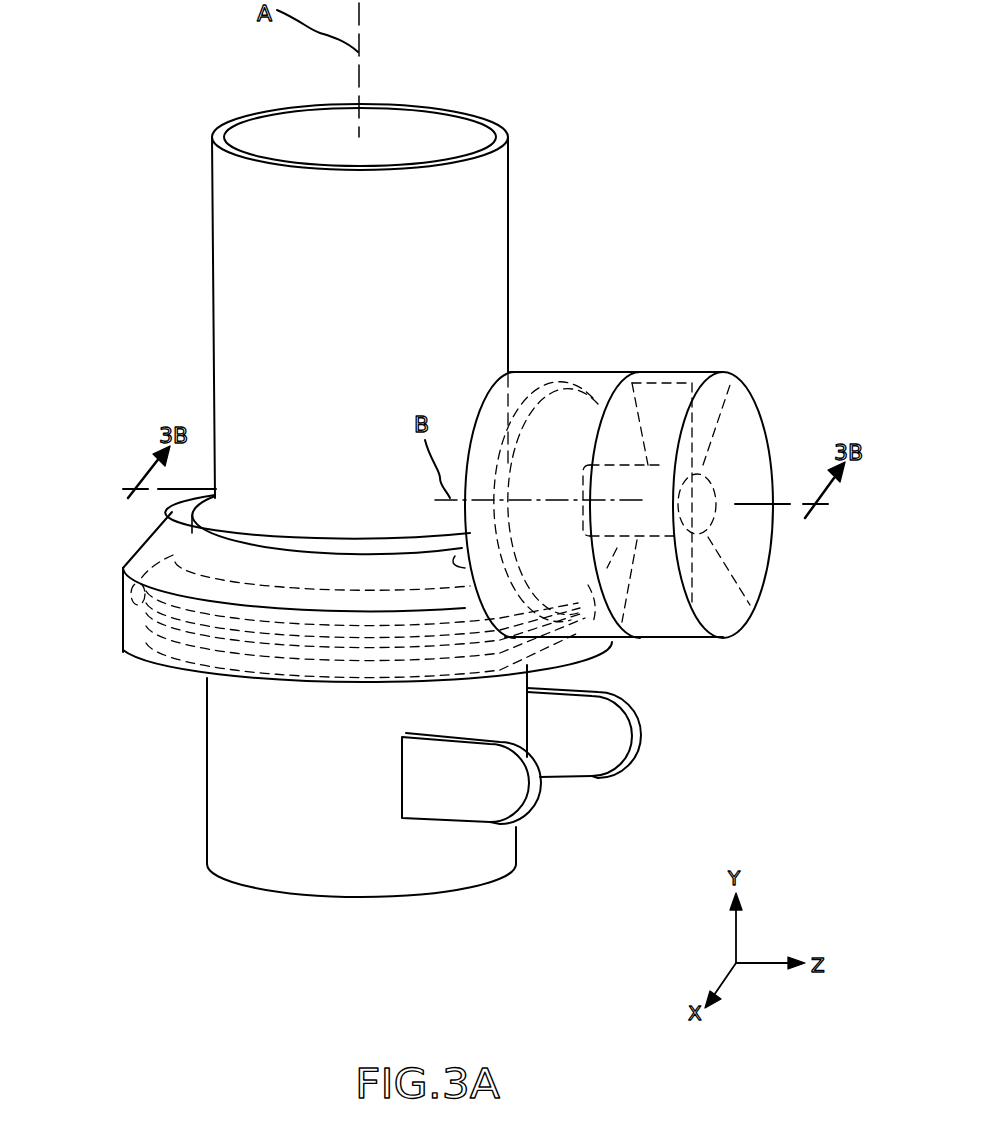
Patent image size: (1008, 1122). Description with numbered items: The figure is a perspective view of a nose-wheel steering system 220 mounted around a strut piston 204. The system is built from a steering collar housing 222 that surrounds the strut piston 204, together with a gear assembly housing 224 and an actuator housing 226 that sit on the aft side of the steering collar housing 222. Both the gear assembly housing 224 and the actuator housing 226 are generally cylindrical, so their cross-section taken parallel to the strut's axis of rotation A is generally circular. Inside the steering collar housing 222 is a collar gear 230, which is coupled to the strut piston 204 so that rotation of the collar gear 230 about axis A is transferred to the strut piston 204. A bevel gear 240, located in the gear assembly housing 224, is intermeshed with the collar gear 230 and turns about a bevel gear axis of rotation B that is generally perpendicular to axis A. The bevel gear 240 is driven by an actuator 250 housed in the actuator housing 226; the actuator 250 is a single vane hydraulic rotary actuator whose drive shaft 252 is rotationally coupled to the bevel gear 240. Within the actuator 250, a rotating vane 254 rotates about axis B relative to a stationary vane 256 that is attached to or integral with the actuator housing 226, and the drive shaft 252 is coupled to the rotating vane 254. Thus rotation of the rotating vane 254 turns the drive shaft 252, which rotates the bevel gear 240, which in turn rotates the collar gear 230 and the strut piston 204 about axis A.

The strut piston 204 is at (220, 732).
The nose-wheel steering system 220 is at (668, 421).
The steering collar housing 222 is at (132, 565).
The gear assembly housing 224 is at (605, 383).
The actuator housing 226 is at (683, 378).
The collar gear 230 is at (165, 625).
The bevel gear 240 is at (563, 562).
The actuator 250 is at (745, 411).
The drive shaft 252 is at (623, 487).
The rotating vane 254 is at (710, 400).
The stationary vane 256 is at (725, 607).